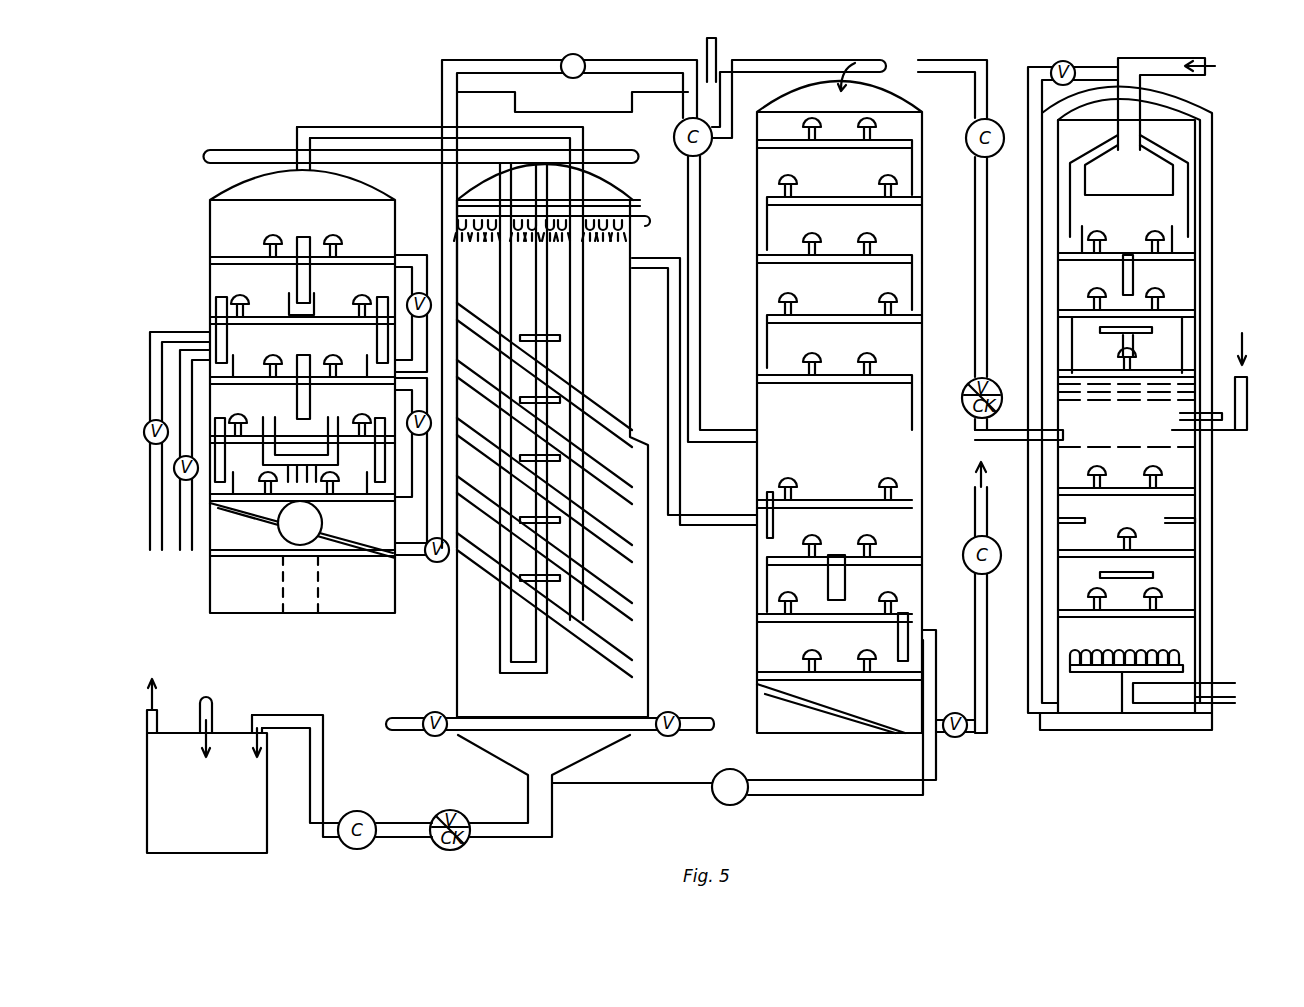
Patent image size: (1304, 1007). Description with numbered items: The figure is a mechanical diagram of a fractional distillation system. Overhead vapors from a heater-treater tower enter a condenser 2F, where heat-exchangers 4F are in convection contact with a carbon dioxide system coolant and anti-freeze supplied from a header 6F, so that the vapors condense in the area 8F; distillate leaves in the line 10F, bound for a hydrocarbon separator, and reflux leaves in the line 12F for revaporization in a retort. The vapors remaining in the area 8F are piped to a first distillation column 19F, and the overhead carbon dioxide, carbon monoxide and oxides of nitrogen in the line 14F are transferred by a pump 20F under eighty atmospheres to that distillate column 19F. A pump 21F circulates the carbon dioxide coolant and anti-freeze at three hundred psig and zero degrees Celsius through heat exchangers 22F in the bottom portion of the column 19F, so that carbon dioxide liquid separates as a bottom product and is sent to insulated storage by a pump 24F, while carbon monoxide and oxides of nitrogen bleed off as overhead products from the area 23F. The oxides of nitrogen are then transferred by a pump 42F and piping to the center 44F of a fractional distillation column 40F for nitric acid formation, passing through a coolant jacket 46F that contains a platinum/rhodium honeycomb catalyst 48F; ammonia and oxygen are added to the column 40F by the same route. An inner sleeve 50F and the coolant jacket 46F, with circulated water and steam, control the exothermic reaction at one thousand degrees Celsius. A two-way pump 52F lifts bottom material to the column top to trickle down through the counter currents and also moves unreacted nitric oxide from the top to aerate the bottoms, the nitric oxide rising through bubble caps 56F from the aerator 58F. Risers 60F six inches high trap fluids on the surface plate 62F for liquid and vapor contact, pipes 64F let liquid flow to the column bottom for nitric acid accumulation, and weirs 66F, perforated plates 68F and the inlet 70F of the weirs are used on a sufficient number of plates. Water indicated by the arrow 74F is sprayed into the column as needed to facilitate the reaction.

The condenser 2F is at (532, 440).
The heat-exchangers 4F is at (586, 334).
The header 6F is at (462, 221).
The area 8F is at (224, 222).
The line 10F is at (430, 560).
The line 12F is at (420, 706).
The line 14F is at (508, 48).
The first distillation column 19F is at (815, 407).
The pump 20F is at (678, 138).
The pump 21F is at (740, 806).
The heat exchangers 22F is at (851, 508).
The area 23F is at (759, 416).
The pump 24F is at (972, 566).
The fractional distillation column 40F is at (1142, 381).
The pump 42F is at (972, 152).
The center 44F is at (1087, 428).
The coolant jacket 46F is at (1213, 457).
The platinum/rhodium honeycomb catalyst 48F is at (1132, 402).
The inner sleeve 50F is at (1200, 145).
The two-way pump 52F is at (1068, 60).
The bubble caps 56F is at (1127, 532).
The aerator 58F is at (1178, 680).
The risers 60F is at (1120, 549).
The surface plate 62F is at (1148, 368).
The pipes 64F is at (1121, 279).
The weirs 66F is at (1082, 244).
The perforated plates 68F is at (1147, 460).
The inlet 70F is at (1196, 262).
The arrow 74F is at (1178, 188).